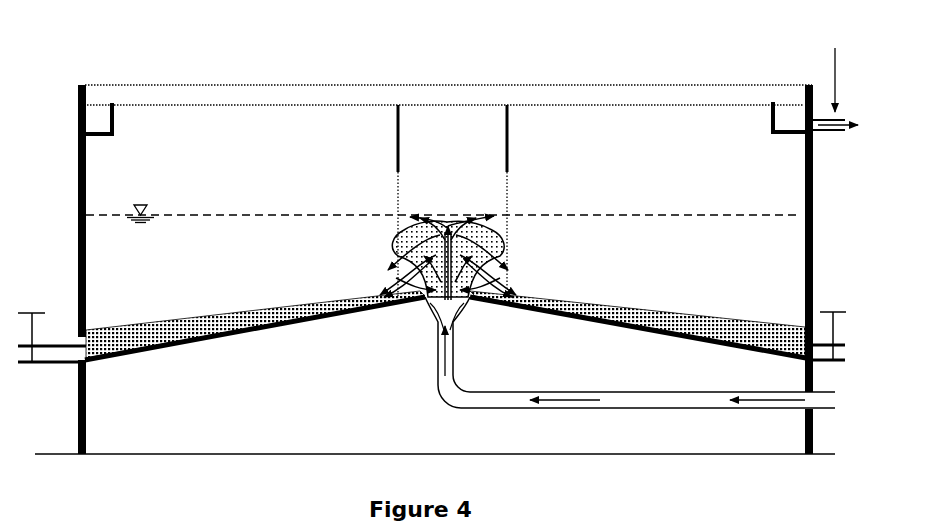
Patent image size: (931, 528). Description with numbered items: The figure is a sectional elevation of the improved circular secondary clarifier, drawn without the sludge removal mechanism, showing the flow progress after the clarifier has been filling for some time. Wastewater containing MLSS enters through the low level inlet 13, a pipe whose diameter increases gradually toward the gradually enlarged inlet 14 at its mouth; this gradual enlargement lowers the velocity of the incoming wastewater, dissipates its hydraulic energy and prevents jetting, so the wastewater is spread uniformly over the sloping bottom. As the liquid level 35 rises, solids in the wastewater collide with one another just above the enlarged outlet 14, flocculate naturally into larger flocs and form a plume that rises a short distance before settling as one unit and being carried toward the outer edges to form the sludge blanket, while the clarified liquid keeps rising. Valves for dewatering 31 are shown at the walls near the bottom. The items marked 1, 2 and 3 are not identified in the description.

The water flow / treated water outlet 1 is at (515, 128).
The settled sludge layer 2 is at (506, 213).
The sludge blanket 3 is at (489, 236).
The inlet 13 is at (651, 394).
The gradually enlarged inlet 14 is at (431, 323).
The valves for dewatering 31 is at (446, 326).
The liquid level after some time 35 is at (151, 201).